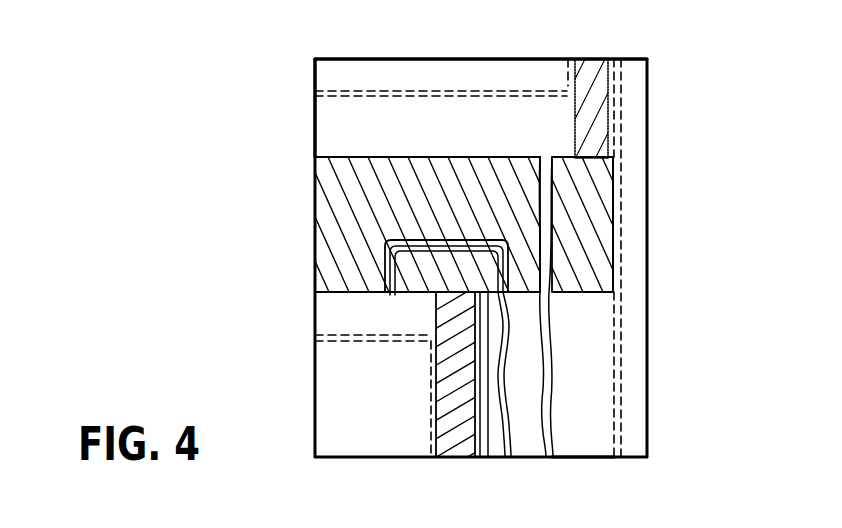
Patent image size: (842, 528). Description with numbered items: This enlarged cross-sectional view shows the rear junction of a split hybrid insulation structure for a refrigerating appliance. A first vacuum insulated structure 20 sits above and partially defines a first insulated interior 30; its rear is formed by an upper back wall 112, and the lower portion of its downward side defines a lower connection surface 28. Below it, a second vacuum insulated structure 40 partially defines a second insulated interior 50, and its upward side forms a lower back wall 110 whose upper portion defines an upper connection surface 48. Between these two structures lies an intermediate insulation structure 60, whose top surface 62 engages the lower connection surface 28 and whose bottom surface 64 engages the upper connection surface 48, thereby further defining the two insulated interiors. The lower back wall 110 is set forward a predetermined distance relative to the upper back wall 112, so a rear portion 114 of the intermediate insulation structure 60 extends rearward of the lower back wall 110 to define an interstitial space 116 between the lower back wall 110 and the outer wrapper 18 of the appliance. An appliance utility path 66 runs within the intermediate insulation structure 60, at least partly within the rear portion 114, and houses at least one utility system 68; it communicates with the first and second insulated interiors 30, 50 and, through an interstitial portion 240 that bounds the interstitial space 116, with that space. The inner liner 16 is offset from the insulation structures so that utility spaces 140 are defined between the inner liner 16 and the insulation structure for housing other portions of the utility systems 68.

The first vacuum insulated structure 20 is at (599, 56).
The first insulated interior 30 is at (463, 80).
The inner liner 16 is at (343, 90).
The utility spaces 140 is at (350, 113).
The upper back wall 112 is at (545, 57).
The lower connection surface 28 is at (578, 157).
The intermediate insulation structure 60 is at (312, 214).
The top surface 62 is at (358, 157).
The bottom surface 64 is at (340, 293).
The upper connection surface 48 is at (436, 294).
The interstitial portion 240 is at (596, 213).
The rear portion 114 is at (618, 254).
The appliance utility path 66 is at (570, 298).
The utility system 68 is at (565, 418).
The lower back wall 110 is at (440, 390).
The second vacuum insulated structure 40 is at (457, 460).
The second insulated interior 50 is at (345, 423).
The outer wrapper 18 is at (621, 388).
The interstitial space 116 is at (577, 440).